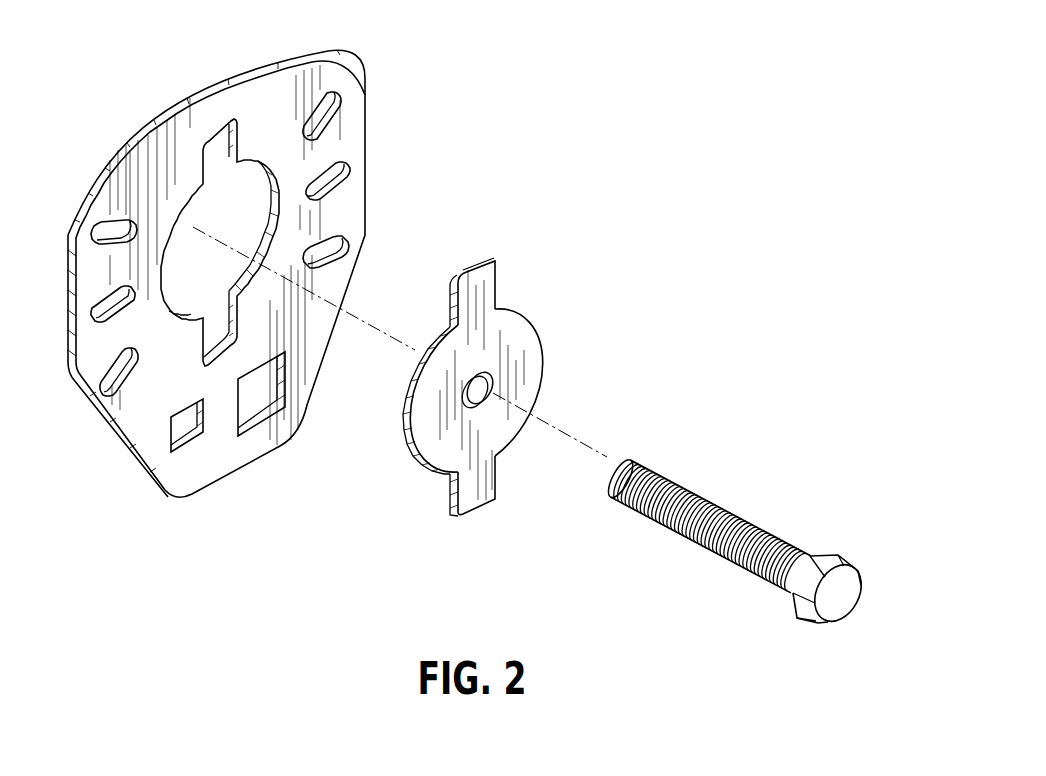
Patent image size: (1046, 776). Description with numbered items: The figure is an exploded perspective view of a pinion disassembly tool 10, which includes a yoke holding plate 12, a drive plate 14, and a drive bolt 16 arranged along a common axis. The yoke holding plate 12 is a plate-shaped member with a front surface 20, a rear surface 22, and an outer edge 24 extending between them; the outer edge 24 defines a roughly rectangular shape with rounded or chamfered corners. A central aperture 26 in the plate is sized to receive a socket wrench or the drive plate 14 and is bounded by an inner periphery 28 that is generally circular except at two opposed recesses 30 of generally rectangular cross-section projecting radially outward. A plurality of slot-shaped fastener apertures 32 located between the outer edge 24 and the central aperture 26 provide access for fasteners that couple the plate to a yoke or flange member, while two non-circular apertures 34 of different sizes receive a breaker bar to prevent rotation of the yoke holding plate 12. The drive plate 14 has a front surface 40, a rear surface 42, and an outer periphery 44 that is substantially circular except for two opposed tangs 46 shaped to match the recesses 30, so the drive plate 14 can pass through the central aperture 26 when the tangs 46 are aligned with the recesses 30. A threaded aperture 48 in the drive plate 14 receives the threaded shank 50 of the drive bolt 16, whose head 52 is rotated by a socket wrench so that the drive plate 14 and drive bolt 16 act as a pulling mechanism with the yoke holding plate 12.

The pinion disassembly tool 10 is at (650, 220).
The yoke holding plate 12 is at (410, 96).
The drive plate 14 is at (534, 316).
The drive bolt 16 is at (744, 516).
The front surface 20 is at (153, 372).
The rear surface 22 is at (112, 166).
The outer edge 24 is at (68, 384).
The central aperture 26 is at (266, 235).
The inner periphery 28 is at (275, 222).
The opposed recesses 30 is at (230, 153).
The fastener apertures 32 is at (341, 98).
The non-circular aperture 34 is at (171, 426).
The front surface 40 is at (447, 456).
The rear surface 42 is at (408, 401).
The outer periphery 44 is at (405, 430).
The opposed tangs 46 is at (477, 267).
The threaded aperture 48 is at (490, 381).
The threaded shank 50 is at (651, 468).
The head 52 is at (853, 584).